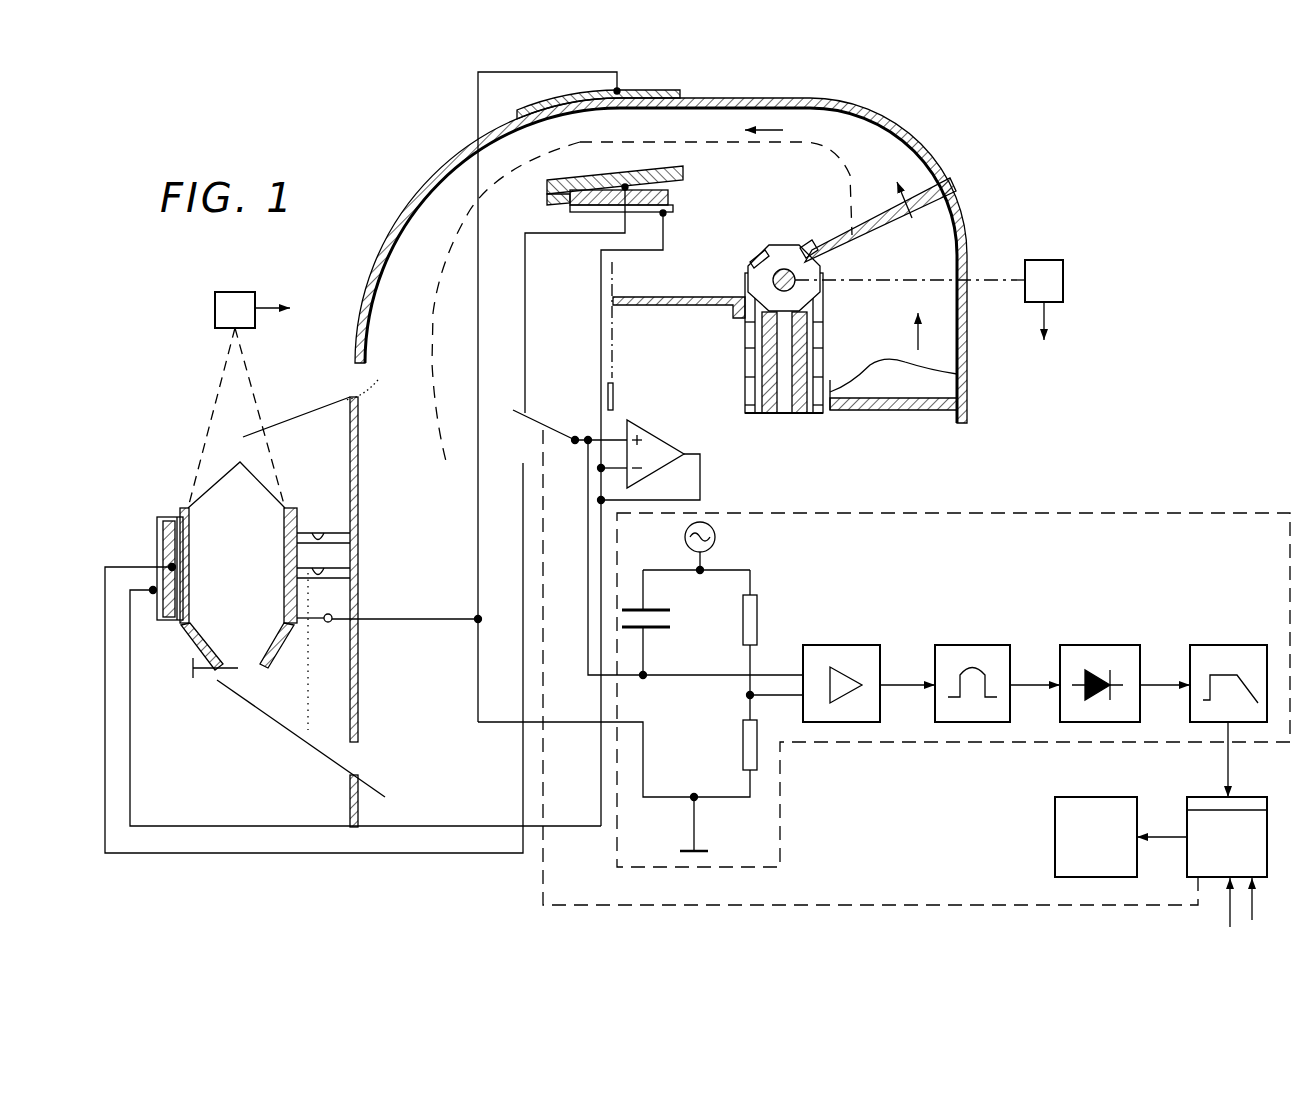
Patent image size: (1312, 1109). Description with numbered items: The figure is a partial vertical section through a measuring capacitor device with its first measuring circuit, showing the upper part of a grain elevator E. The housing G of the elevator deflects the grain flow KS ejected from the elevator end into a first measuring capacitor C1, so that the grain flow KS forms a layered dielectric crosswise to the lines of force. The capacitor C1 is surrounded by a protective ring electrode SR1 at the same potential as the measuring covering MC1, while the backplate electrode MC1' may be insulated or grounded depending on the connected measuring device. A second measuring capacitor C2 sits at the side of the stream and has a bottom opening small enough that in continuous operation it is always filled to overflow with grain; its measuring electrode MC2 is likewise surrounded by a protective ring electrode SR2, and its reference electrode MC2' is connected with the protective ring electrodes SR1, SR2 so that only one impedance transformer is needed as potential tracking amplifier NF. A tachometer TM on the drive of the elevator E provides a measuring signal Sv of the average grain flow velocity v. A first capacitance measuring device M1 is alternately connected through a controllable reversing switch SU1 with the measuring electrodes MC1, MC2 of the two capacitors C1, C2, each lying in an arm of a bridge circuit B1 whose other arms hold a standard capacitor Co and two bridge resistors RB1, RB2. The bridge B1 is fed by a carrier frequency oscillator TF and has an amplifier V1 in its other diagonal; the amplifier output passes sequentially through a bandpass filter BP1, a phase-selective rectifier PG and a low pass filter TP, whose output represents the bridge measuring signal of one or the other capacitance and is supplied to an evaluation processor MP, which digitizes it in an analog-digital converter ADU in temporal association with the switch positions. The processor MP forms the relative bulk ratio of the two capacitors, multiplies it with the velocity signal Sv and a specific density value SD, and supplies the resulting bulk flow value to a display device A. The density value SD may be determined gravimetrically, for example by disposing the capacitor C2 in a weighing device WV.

The housing G is at (913, 165).
The grain flow KS is at (798, 140).
The average grain flow velocity v is at (906, 211).
The backplate electrode MC1' is at (579, 397).
The measuring covering MC1 is at (635, 496).
The first measuring capacitor C1 is at (540, 175).
The protective ring electrode SR1 is at (556, 200).
The grain elevator E is at (890, 343).
The tachometer TM is at (1044, 281).
The velocity signal Sv is at (1282, 935).
The controllable reversing switch SU1 is at (543, 422).
The potential tracking amplifier NF is at (665, 442).
The first capacitance measuring device M1 is at (1032, 585).
The bridge circuit B1 is at (710, 739).
The carrier frequency oscillator TF is at (685, 538).
The standard capacitor Co is at (651, 624).
The bridge resistor RB1 is at (743, 617).
The bridge resistor RB2 is at (743, 758).
The amplifier V1 is at (834, 645).
The bandpass filter BP1 is at (950, 645).
The phase-selective rectifier PG is at (1080, 645).
The low pass filter TP is at (1210, 645).
The evaluation processor MP is at (1227, 837).
The analog-digital converter ADU is at (1200, 797).
The display device A is at (1096, 837).
The weighing device WV is at (236, 400).
The specific density value SD is at (1228, 920).
The second measuring capacitor C2 is at (207, 518).
The measuring electrode MC2 is at (237, 678).
The protective ring electrode SR2 is at (180, 615).
The reference electrode MC2' is at (385, 592).